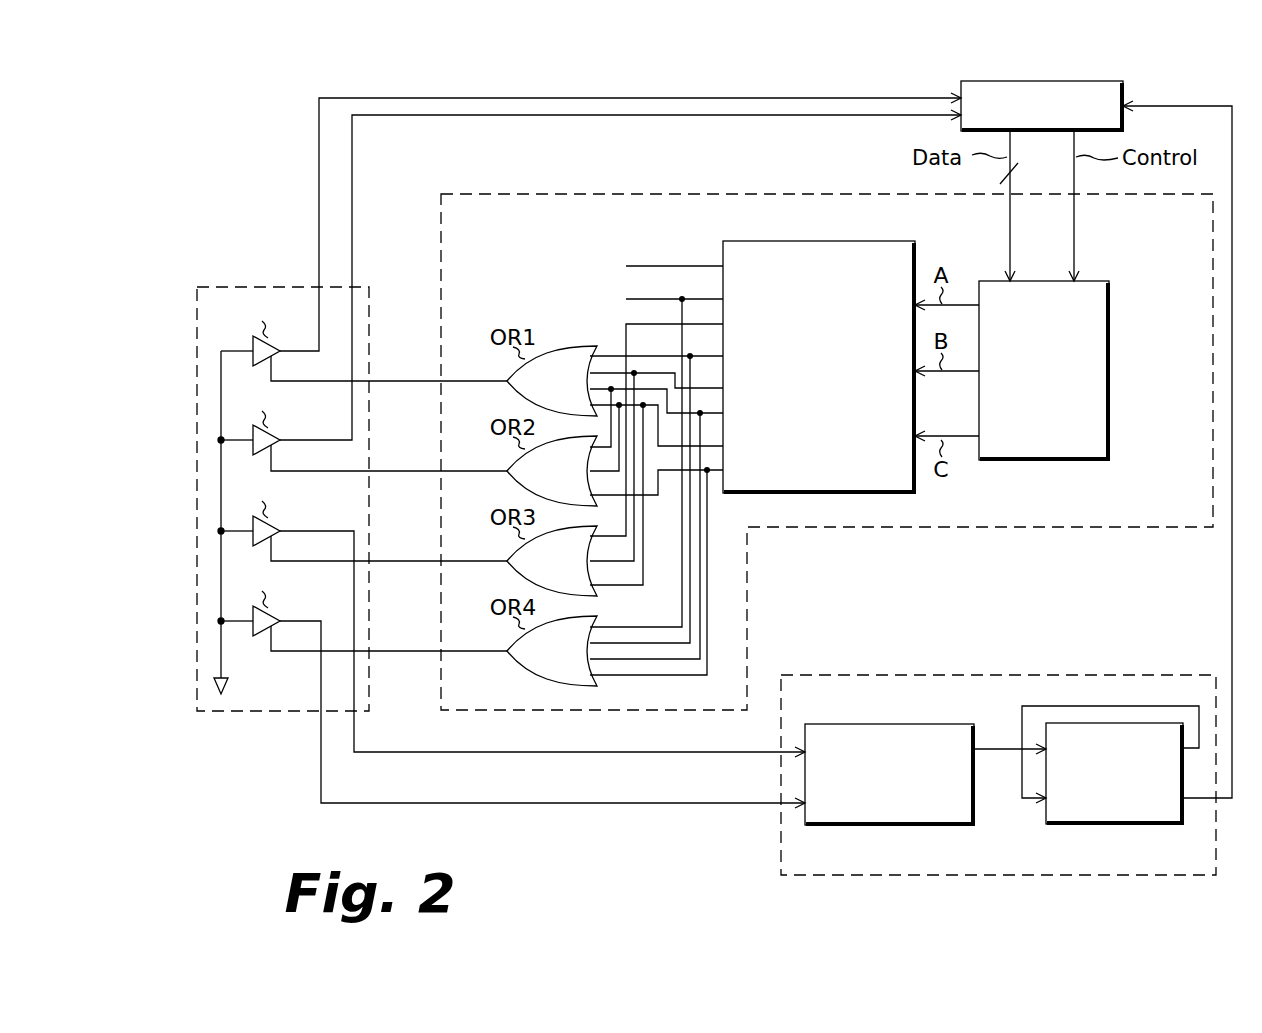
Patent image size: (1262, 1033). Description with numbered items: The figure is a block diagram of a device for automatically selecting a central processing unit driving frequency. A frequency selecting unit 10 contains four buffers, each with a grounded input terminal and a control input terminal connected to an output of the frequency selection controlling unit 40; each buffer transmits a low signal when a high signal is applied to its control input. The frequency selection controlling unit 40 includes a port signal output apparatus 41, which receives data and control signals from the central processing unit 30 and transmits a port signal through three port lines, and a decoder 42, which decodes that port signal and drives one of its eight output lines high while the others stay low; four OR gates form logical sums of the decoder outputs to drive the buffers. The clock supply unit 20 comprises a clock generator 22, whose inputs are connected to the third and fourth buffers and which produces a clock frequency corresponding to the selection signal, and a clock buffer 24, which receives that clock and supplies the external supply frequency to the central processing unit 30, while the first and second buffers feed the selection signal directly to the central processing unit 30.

The frequency selecting unit 10 is at (245, 286).
The clock supply unit 20 is at (990, 674).
The clock generator 22 is at (879, 723).
The clock buffer 24 is at (1107, 827).
The central processing unit 30 is at (1079, 80).
The frequency selection controlling unit 40 is at (1128, 528).
The port signal output apparatus 41 is at (1110, 370).
The decoder 42 is at (816, 241).